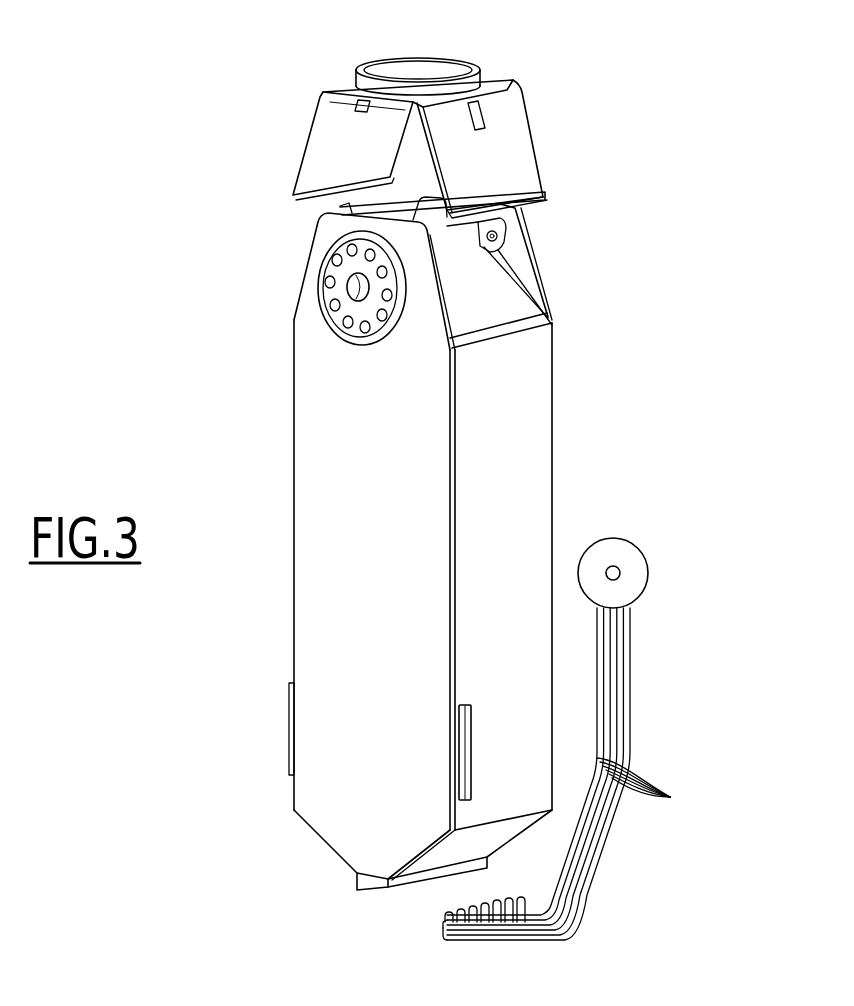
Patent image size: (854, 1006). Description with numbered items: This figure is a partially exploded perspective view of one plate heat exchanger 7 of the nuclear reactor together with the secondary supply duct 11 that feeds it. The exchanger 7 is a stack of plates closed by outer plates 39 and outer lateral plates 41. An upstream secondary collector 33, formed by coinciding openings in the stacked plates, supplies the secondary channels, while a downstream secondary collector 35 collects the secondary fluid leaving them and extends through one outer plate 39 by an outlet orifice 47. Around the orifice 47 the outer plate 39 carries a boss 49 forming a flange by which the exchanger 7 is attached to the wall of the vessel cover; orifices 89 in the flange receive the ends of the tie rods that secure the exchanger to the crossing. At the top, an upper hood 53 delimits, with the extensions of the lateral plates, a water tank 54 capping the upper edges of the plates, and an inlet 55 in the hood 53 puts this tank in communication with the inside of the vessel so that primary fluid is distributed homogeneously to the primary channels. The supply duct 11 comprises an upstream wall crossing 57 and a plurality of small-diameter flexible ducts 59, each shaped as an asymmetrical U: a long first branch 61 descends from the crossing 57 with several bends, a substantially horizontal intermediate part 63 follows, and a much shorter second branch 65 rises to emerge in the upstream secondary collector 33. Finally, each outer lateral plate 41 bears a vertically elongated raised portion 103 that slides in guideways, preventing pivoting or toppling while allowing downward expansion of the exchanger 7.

The heat exchanger 7 is at (217, 598).
The duct 11 is at (640, 527).
The upstream secondary collector 33 is at (397, 892).
The downstream secondary collector 35 is at (348, 293).
The outer plate 39 is at (335, 473).
The outer lateral plate 41 is at (510, 465).
The outlet orifice 47 is at (333, 258).
The boss 49 is at (343, 333).
The upper hood 53 is at (519, 144).
The water tank 54 is at (370, 180).
The inlet 55 is at (440, 72).
The upstream wall crossing 57 is at (634, 574).
The flexible ducts 59 is at (670, 797).
The first branch 61 is at (610, 867).
The intermediate part 63 is at (518, 942).
The second branch 65 is at (445, 928).
The orifice 89 is at (386, 318).
The raised portion 103 is at (463, 757).